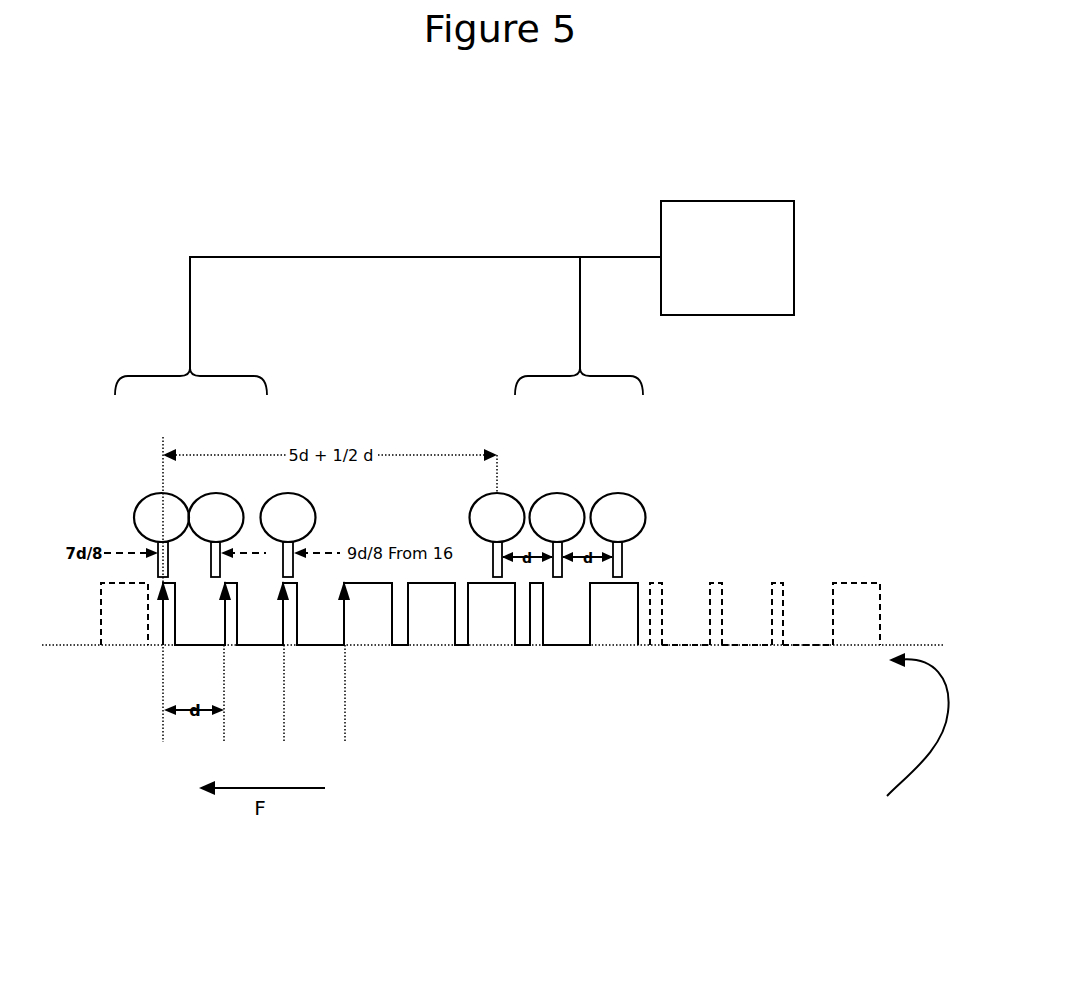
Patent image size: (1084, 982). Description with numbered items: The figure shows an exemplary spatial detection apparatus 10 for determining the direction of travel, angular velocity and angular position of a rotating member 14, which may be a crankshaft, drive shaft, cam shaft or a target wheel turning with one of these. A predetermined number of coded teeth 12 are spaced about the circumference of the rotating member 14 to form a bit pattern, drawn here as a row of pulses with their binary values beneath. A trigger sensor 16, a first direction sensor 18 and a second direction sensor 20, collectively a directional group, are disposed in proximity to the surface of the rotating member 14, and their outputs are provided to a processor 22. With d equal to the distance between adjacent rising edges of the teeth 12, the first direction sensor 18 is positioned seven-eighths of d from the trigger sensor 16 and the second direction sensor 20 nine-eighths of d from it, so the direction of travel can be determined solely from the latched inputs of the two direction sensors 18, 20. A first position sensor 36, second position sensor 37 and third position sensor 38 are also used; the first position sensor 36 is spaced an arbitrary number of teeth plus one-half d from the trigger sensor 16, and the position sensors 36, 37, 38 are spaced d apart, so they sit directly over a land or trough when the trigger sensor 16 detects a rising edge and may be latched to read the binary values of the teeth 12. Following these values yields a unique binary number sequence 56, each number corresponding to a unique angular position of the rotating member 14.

The spatial detection apparatus 10 is at (141, 158).
The teeth 12 is at (630, 583).
The rotating member 14 is at (890, 642).
The trigger sensor 16 is at (148, 492).
The first direction sensor 18 is at (213, 490).
The second direction sensor 20 is at (287, 490).
The processor 22 is at (727, 258).
The first position sensor 36 is at (508, 484).
The second position sensor 37 is at (563, 484).
The third position sensor 38 is at (625, 484).
The unique binary number sequence 56 is at (907, 740).